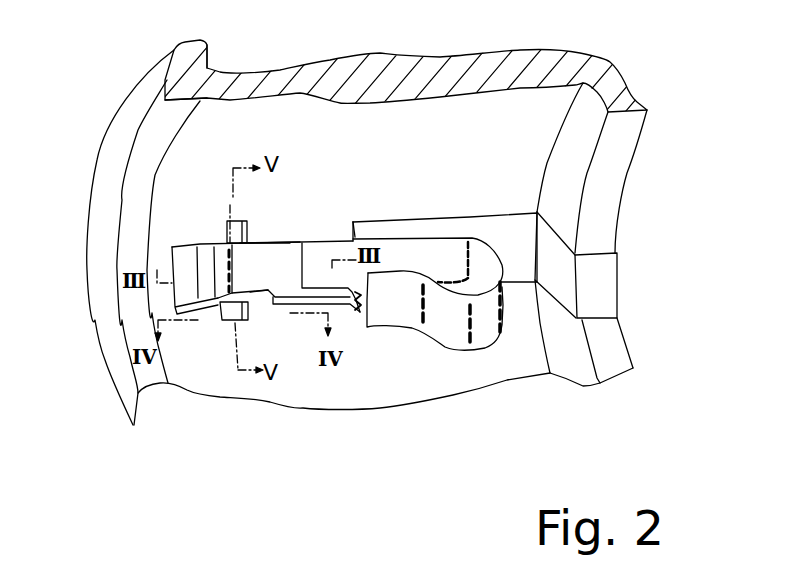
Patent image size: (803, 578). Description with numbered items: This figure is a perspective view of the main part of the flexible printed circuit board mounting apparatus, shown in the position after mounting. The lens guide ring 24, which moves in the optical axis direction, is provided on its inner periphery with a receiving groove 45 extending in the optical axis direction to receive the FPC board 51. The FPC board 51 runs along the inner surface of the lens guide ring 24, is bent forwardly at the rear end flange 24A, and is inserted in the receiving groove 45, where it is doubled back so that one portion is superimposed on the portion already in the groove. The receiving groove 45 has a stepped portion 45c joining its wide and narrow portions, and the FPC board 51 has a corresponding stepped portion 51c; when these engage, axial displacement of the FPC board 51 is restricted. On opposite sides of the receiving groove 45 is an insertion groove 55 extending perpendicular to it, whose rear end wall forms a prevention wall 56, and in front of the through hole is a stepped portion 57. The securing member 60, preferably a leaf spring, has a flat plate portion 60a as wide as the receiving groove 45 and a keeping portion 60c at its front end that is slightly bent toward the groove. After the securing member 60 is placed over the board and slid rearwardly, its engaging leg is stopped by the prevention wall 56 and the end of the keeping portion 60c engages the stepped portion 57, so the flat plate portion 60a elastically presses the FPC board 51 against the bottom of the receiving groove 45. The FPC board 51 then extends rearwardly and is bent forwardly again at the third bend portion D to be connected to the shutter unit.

The lens guide ring 24 is at (418, 85).
The rear end flange 24A is at (607, 190).
The stepped portion 57 is at (117, 227).
The receiving groove 45 is at (518, 250).
The stepped portion 45c is at (355, 237).
The stepped portion 51c is at (392, 287).
The FPC board 51 is at (367, 327).
The third bend portion D is at (437, 335).
The securing member 60 is at (243, 277).
The keeping portion 60c is at (212, 240).
The flat plate portion 60a is at (287, 255).
The insertion groove 55 is at (227, 413).
The prevention wall 56 is at (302, 412).